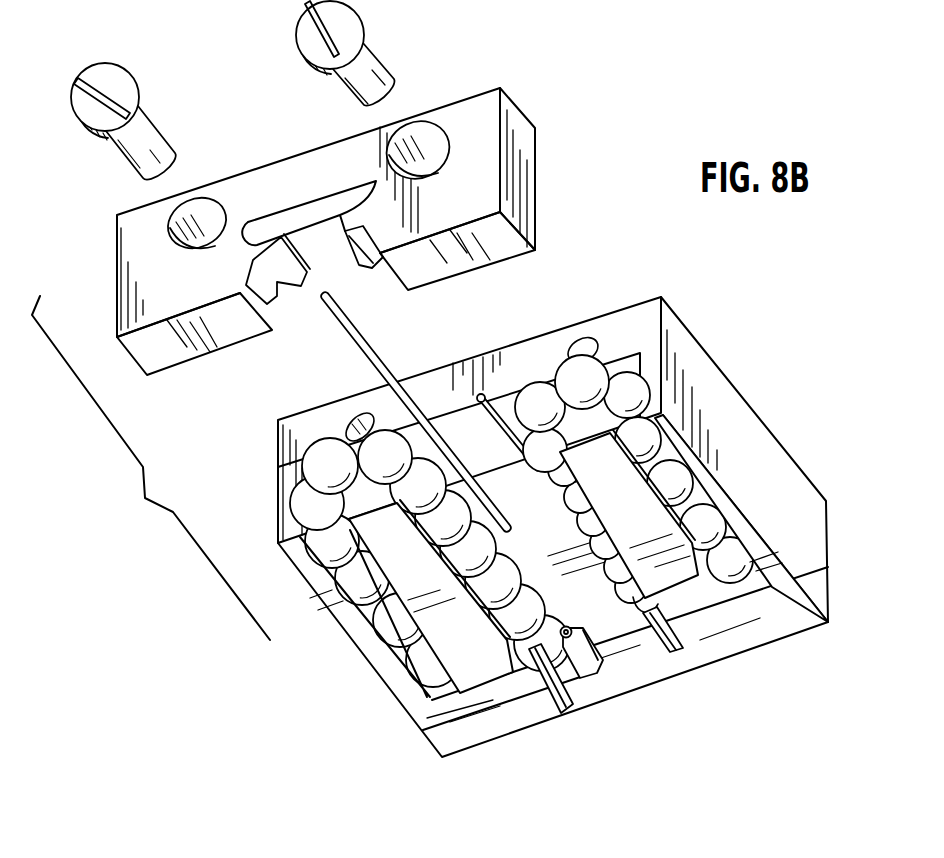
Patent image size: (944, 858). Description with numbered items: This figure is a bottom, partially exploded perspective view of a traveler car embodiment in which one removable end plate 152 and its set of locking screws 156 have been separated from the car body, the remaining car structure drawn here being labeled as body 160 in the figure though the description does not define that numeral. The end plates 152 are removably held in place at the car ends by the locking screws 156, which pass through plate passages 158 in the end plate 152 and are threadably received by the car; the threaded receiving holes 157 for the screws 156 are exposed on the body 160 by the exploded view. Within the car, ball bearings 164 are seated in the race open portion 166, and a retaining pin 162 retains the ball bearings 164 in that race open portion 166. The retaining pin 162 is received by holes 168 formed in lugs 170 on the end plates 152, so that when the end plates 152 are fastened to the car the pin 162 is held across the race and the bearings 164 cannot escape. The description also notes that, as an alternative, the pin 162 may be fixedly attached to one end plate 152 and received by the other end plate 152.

The end plate 152 is at (536, 160).
The locking screws 156 is at (120, 168).
The threaded receiving holes 157 is at (345, 410).
The plate passages 158 is at (218, 200).
The housing block 160 is at (700, 343).
The retaining pin 162 is at (370, 340).
The ball bearings 164 is at (290, 463).
The race open portion 166 is at (373, 668).
The holes 168 is at (300, 295).
The lugs 170 is at (305, 272).